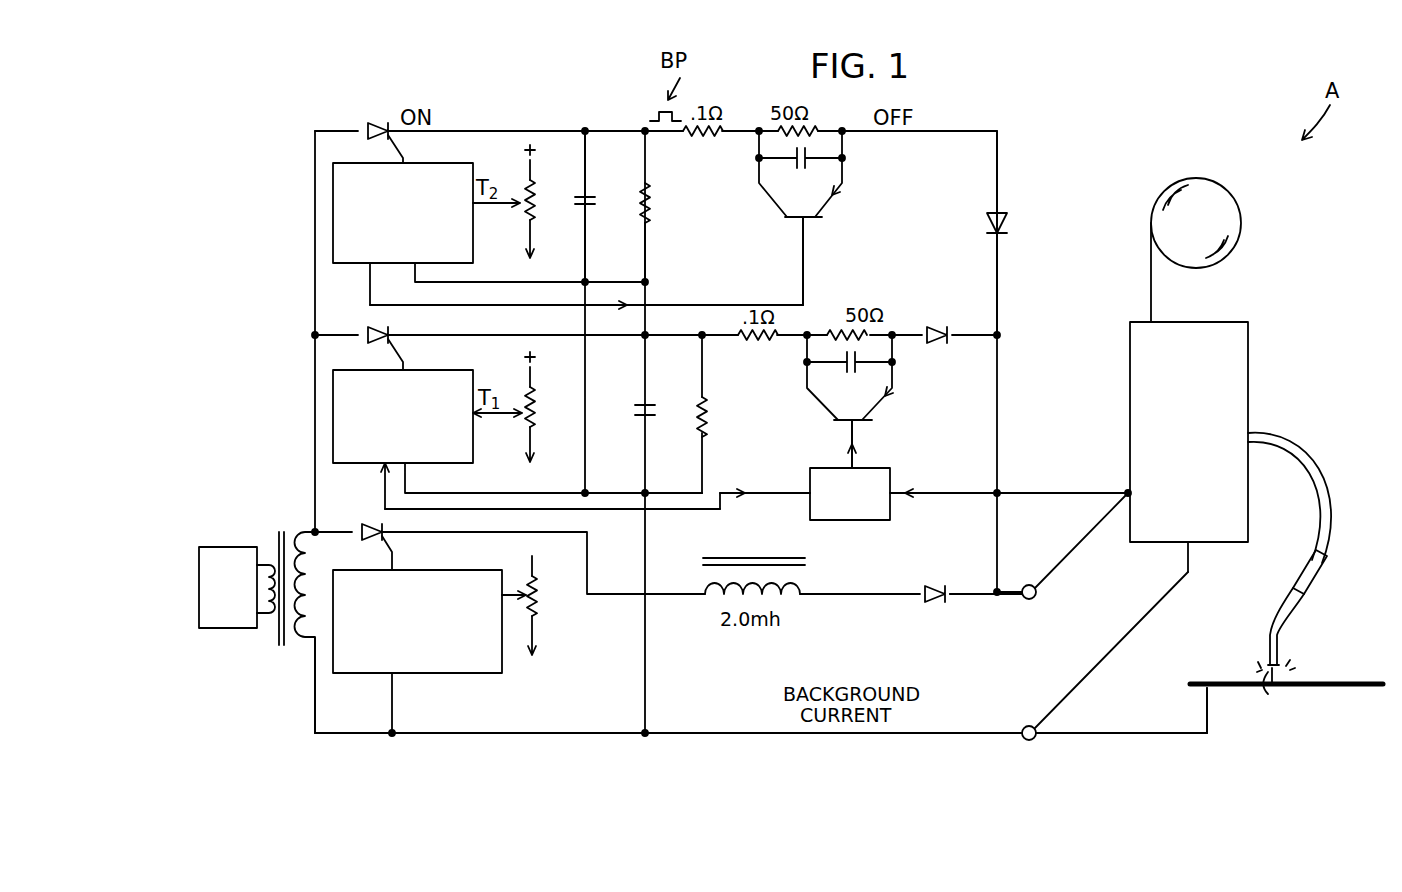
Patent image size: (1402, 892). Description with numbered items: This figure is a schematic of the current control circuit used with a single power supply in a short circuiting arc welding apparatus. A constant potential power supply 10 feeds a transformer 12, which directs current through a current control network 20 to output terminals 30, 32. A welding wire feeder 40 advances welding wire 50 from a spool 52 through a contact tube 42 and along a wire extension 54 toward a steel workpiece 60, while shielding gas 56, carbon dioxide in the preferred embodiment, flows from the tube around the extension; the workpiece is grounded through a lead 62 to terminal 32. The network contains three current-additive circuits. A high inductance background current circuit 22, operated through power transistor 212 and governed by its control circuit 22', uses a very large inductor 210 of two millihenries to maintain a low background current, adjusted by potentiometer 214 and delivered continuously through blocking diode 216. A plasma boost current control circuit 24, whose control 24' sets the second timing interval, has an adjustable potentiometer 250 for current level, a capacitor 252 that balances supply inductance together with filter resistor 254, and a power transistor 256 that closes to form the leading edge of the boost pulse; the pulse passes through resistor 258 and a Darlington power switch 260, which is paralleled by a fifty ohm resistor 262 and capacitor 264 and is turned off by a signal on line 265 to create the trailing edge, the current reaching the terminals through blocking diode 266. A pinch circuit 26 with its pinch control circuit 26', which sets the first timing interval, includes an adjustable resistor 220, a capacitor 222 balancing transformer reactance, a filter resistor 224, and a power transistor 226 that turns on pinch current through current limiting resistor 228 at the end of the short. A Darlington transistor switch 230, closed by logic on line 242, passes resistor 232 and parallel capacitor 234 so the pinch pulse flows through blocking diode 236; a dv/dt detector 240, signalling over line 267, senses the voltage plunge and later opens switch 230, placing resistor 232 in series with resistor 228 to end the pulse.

The constant potential power supply 10 is at (226, 547).
The transformer 12 is at (280, 645).
The current control network 20 is at (1023, 116).
The background current circuit 22 is at (480, 759).
The background current control circuit 22' is at (429, 634).
The plasma boost current control circuit 24 is at (595, 170).
The plasma boost control circuit 24' is at (568, 198).
The pinch circuit 26 is at (681, 520).
The pinch control circuit 26' is at (571, 409).
The output terminal 30 is at (1036, 622).
The output terminal 32 is at (1026, 726).
The welding wire feeder 40 is at (1261, 381).
The contact tube 42 is at (1307, 578).
The welding wire 50 is at (1152, 297).
The spool 52 is at (1241, 219).
The wire extension 54 is at (1282, 689).
The shielding gas 56 is at (1263, 668).
The workpiece 60 is at (1343, 680).
The workpiece lead 62 is at (1209, 710).
The inductor 210 is at (806, 571).
The power transistor 212 is at (367, 524).
The potentiometer 214 is at (535, 622).
The blocking diode 216 is at (934, 606).
The resistor 220 is at (534, 400).
The capacitor 222 is at (634, 408).
The resistor 224 is at (702, 418).
The power transistor 226 is at (373, 326).
The current limiting resistor 228 is at (756, 344).
The Darlington connected transistor switch 230 is at (860, 422).
The resistor 232 is at (832, 328).
The capacitor 234 is at (860, 374).
The blocking diode 236 is at (940, 325).
The detector 240 is at (890, 468).
The line 242 is at (845, 458).
The adjustable potentiometer 250 is at (534, 192).
The capacitor 252 is at (592, 206).
The filter resistor 254 is at (650, 200).
The power transistor 256 is at (378, 122).
The resistor 258 is at (722, 122).
The Darlington connected power switch 260 is at (812, 220).
The resistor 262 is at (818, 122).
The capacitor 264 is at (808, 168).
The line 265 is at (672, 300).
The blocking diode 266 is at (1007, 224).
The line 267 is at (608, 509).